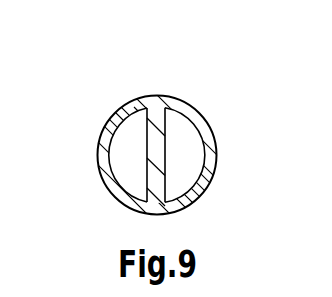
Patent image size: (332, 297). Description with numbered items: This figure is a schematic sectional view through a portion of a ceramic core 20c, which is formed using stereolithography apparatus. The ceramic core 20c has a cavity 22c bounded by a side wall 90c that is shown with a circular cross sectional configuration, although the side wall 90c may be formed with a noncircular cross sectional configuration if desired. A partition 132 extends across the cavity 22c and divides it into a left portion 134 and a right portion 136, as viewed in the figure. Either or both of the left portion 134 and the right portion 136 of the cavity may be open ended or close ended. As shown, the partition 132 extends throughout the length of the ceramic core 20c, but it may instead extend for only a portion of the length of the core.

The ceramic core 20c is at (200, 114).
The cavity 22c is at (188, 160).
The side wall 90c is at (106, 157).
The partition 132 is at (146, 113).
The left portion of the cavity 134 is at (130, 165).
The right portion of the cavity 136 is at (180, 175).